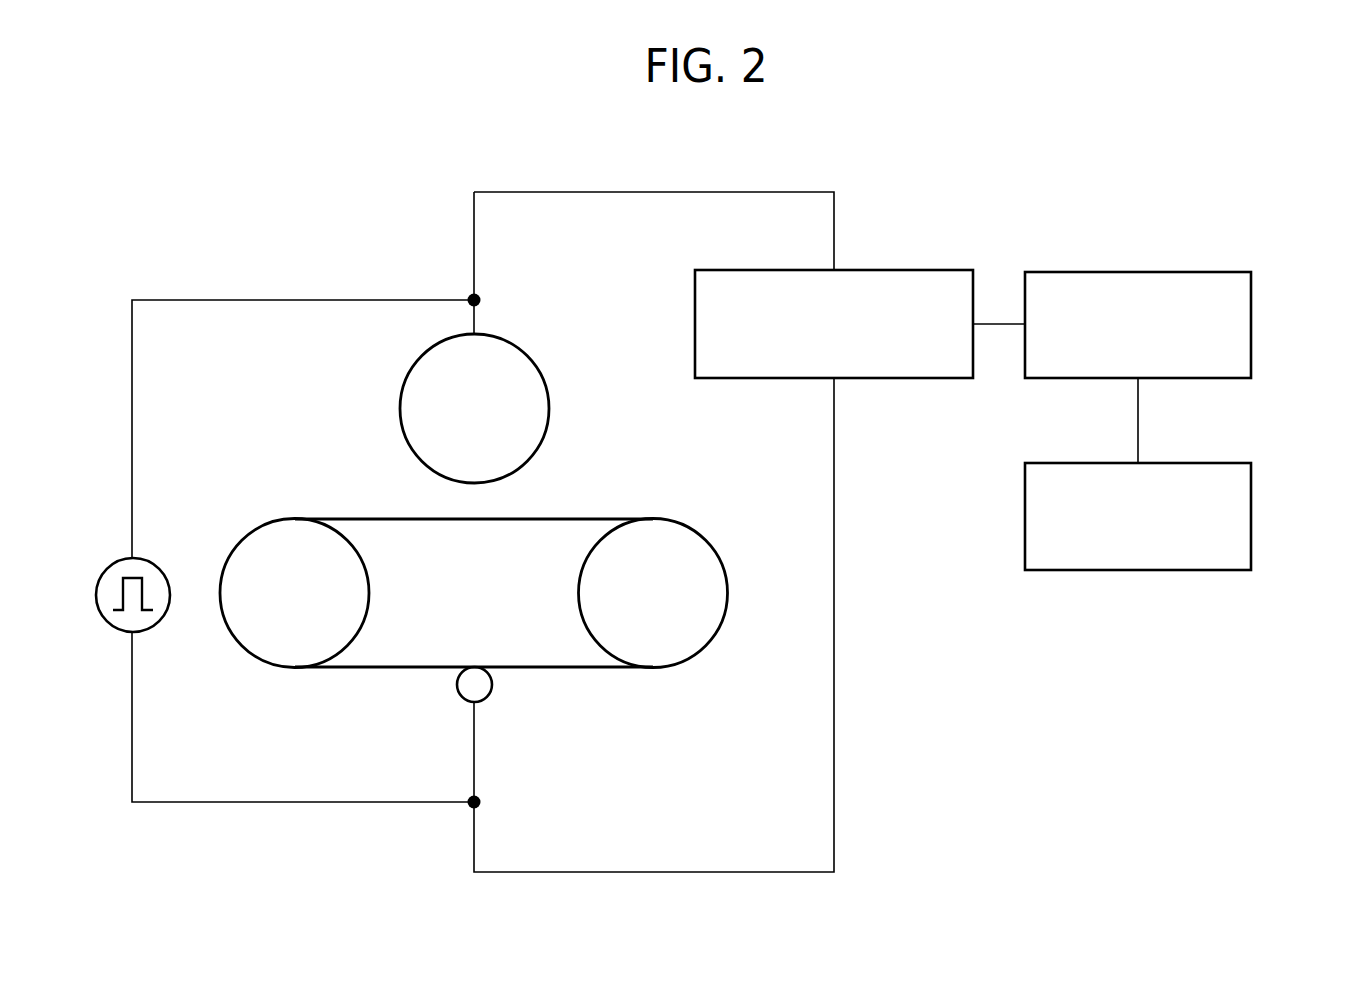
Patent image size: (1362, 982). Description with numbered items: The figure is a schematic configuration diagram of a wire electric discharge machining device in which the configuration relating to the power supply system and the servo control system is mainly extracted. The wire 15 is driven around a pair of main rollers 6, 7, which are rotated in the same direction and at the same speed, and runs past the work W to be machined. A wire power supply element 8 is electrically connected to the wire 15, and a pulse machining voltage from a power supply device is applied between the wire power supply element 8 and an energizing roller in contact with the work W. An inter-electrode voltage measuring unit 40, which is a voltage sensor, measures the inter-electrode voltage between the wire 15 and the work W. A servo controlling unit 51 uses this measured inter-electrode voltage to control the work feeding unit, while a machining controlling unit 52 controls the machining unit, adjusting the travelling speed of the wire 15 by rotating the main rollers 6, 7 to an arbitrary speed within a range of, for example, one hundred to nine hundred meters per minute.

The work W is at (398, 412).
The main roller 6 is at (263, 519).
The main roller 7 is at (686, 520).
The wire power supply element 8 is at (461, 699).
The wire 15 is at (560, 669).
The inter-electrode voltage measuring unit 40 is at (880, 270).
The servo controlling unit 51 is at (1253, 322).
The machining controlling unit 52 is at (1253, 512).